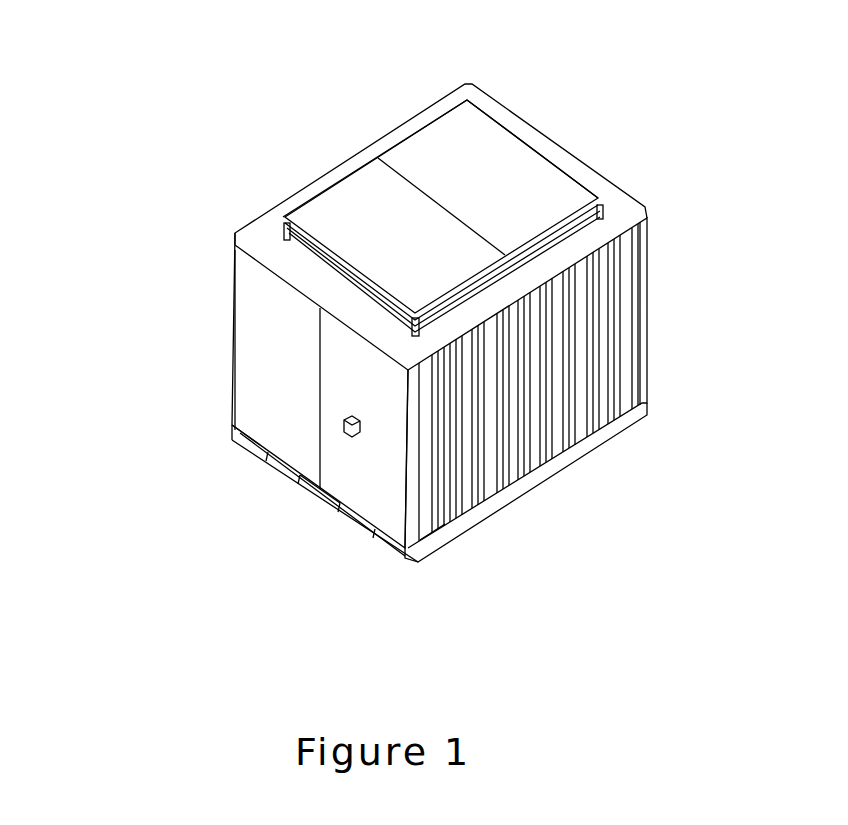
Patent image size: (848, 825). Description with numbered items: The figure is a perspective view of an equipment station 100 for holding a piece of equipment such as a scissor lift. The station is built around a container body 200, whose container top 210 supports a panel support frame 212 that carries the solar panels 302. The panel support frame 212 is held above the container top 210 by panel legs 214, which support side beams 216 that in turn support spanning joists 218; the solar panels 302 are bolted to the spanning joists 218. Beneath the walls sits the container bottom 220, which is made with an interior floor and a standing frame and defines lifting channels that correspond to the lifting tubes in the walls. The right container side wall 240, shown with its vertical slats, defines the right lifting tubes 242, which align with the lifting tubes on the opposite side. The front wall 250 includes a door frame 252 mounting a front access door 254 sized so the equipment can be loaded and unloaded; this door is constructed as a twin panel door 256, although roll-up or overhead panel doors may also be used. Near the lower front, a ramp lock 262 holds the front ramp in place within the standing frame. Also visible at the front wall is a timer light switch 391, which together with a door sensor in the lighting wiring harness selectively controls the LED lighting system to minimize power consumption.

The equipment station 100 is at (603, 110).
The container body 200 is at (640, 205).
The container top 210 is at (253, 217).
The panel support frame 212 is at (296, 242).
The panel legs 214 is at (413, 332).
The side beams 216 is at (575, 228).
The spanning joists 218 is at (357, 280).
The container bottom 220 is at (390, 555).
The right container side wall 240 is at (650, 347).
The right lifting tubes 242 is at (568, 466).
The front wall 250 is at (232, 387).
The door frame 252 is at (437, 537).
The front access door 254 is at (373, 537).
The twin panel door 256 is at (245, 440).
The ramp lock 262 is at (320, 500).
The solar panels 302 is at (418, 131).
The timer light switch 391 is at (358, 432).